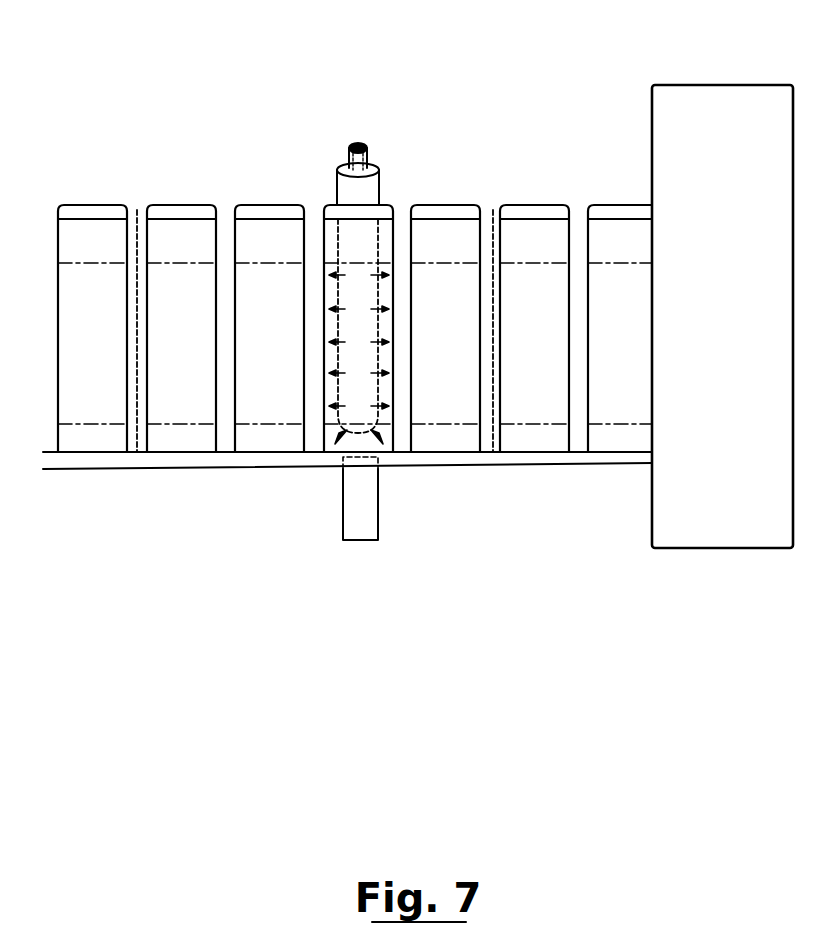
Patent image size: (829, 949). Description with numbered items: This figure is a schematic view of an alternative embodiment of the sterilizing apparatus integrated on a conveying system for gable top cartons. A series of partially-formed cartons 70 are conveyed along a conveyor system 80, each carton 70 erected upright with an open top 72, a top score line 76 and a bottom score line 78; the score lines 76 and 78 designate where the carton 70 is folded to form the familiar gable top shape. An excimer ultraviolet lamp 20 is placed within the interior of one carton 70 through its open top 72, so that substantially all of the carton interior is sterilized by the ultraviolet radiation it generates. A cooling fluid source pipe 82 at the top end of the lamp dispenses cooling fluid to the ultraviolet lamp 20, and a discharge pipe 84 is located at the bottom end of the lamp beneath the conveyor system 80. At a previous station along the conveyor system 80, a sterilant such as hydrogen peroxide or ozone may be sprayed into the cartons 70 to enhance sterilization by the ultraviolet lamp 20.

The ultraviolet lamp 20 is at (382, 157).
The partially-formed carton 70 is at (332, 207).
The open top 72 is at (182, 205).
The top score line 76 is at (355, 263).
The bottom score line 78 is at (287, 425).
The conveyor system 80 is at (78, 480).
The cooling fluid source pipe 82 is at (358, 148).
The discharge pipe 84 is at (378, 510).